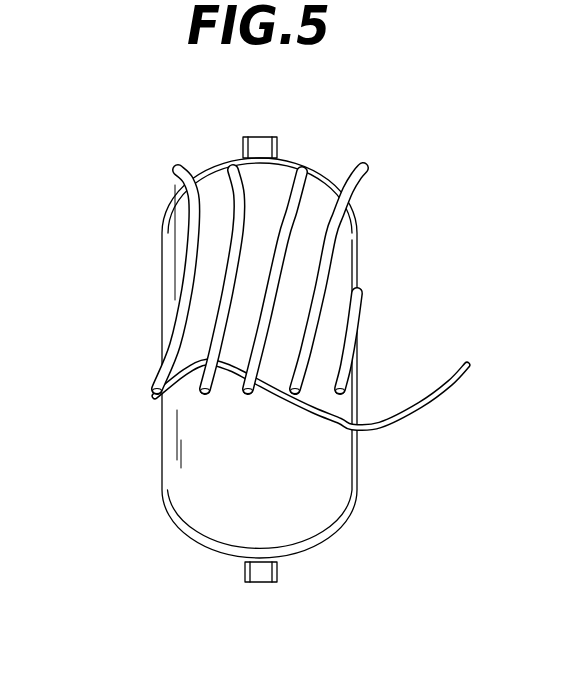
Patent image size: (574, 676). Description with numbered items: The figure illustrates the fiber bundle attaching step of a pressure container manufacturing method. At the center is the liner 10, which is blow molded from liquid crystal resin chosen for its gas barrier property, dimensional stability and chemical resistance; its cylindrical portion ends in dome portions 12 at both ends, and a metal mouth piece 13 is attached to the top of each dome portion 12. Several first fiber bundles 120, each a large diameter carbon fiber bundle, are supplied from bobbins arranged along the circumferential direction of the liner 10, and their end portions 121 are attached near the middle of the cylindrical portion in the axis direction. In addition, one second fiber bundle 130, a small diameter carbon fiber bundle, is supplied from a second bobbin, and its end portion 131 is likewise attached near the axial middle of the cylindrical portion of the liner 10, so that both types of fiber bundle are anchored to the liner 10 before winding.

The liner 10 is at (273, 362).
The dome portion 12 is at (305, 165).
The metal mouth piece 13 is at (263, 136).
The first fiber bundle 120 is at (281, 315).
The end portion of first fiber bundle 121 is at (199, 398).
The second fiber bundle 130 is at (294, 396).
The end portion of second fiber bundle 131 is at (155, 395).